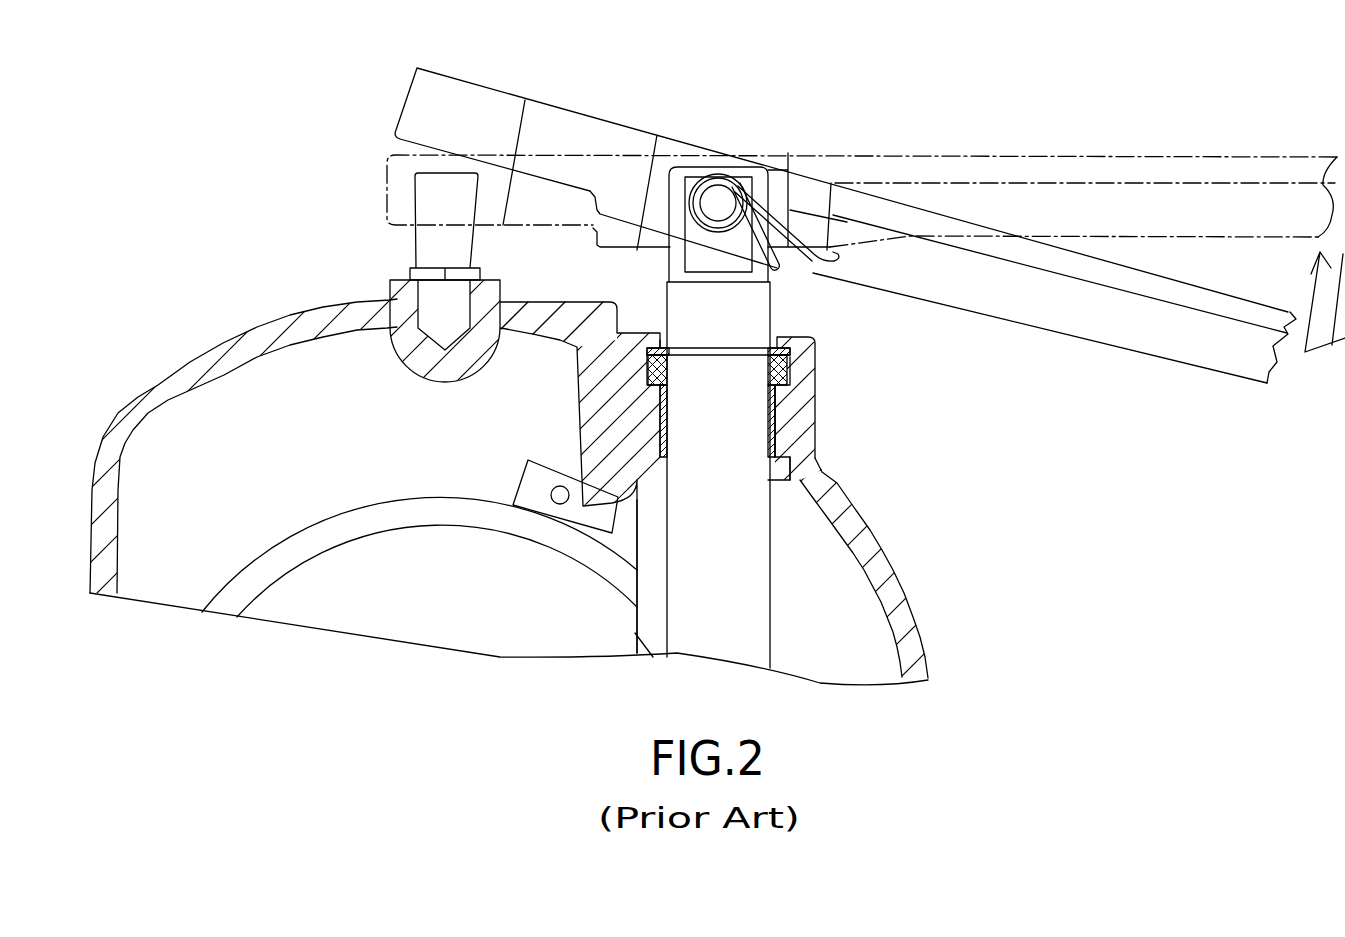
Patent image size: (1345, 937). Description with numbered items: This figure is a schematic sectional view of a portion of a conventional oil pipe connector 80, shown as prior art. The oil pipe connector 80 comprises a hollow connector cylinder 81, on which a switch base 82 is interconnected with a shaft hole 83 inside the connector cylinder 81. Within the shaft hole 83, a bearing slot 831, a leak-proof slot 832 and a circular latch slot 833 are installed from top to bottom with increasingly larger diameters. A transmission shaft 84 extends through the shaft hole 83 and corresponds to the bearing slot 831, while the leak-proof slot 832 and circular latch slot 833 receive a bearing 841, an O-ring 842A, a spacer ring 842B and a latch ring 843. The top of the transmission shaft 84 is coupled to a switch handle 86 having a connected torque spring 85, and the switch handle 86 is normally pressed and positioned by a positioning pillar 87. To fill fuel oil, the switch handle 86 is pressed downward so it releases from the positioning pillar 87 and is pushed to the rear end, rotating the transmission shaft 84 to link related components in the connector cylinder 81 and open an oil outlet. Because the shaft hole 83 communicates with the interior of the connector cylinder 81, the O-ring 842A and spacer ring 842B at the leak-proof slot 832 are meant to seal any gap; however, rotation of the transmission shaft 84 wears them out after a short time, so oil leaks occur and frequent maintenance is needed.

The oil pipe connector 80 is at (240, 252).
The connector cylinder 81 is at (905, 640).
The switch base 82 is at (793, 342).
The shaft hole 83 is at (767, 337).
The transmission shaft 84 is at (680, 303).
The torque spring 85 is at (780, 268).
The switch handle 86 is at (562, 108).
The positioning pillar 87 is at (433, 193).
The bearing slot 831 is at (657, 433).
The leak-proof slot 832 is at (660, 363).
The circular latch slot 833 is at (647, 352).
The bearing 841 is at (780, 385).
The O-ring 842A is at (790, 368).
The spacer ring 842B is at (788, 358).
The latch ring 843 is at (792, 350).